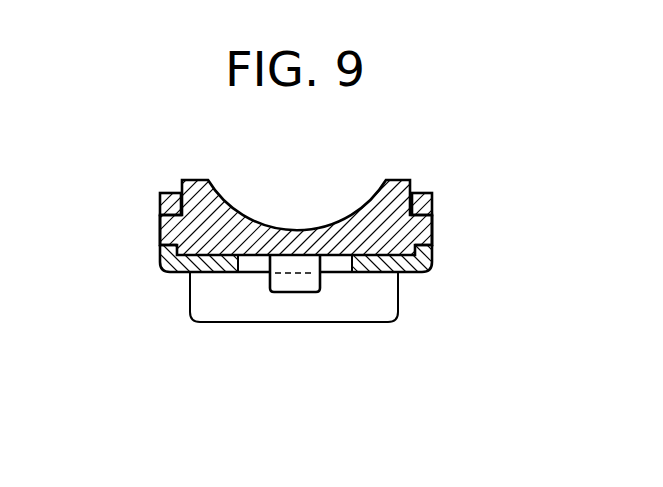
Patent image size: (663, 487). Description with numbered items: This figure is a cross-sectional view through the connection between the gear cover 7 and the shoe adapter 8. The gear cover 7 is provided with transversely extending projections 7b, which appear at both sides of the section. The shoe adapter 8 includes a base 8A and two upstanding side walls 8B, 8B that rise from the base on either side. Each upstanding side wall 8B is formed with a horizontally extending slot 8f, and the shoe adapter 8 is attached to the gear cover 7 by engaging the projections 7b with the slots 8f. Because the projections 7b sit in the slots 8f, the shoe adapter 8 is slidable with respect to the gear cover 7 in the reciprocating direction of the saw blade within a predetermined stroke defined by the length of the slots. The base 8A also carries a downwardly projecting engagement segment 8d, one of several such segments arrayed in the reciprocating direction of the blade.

The gear cover 7 is at (400, 180).
The projection 7b is at (160, 237).
The shoe adapter 8 is at (325, 310).
The base 8A is at (212, 275).
The upstanding side wall 8B is at (160, 203).
The engagement segment 8d is at (266, 297).
The slot 8f is at (160, 245).